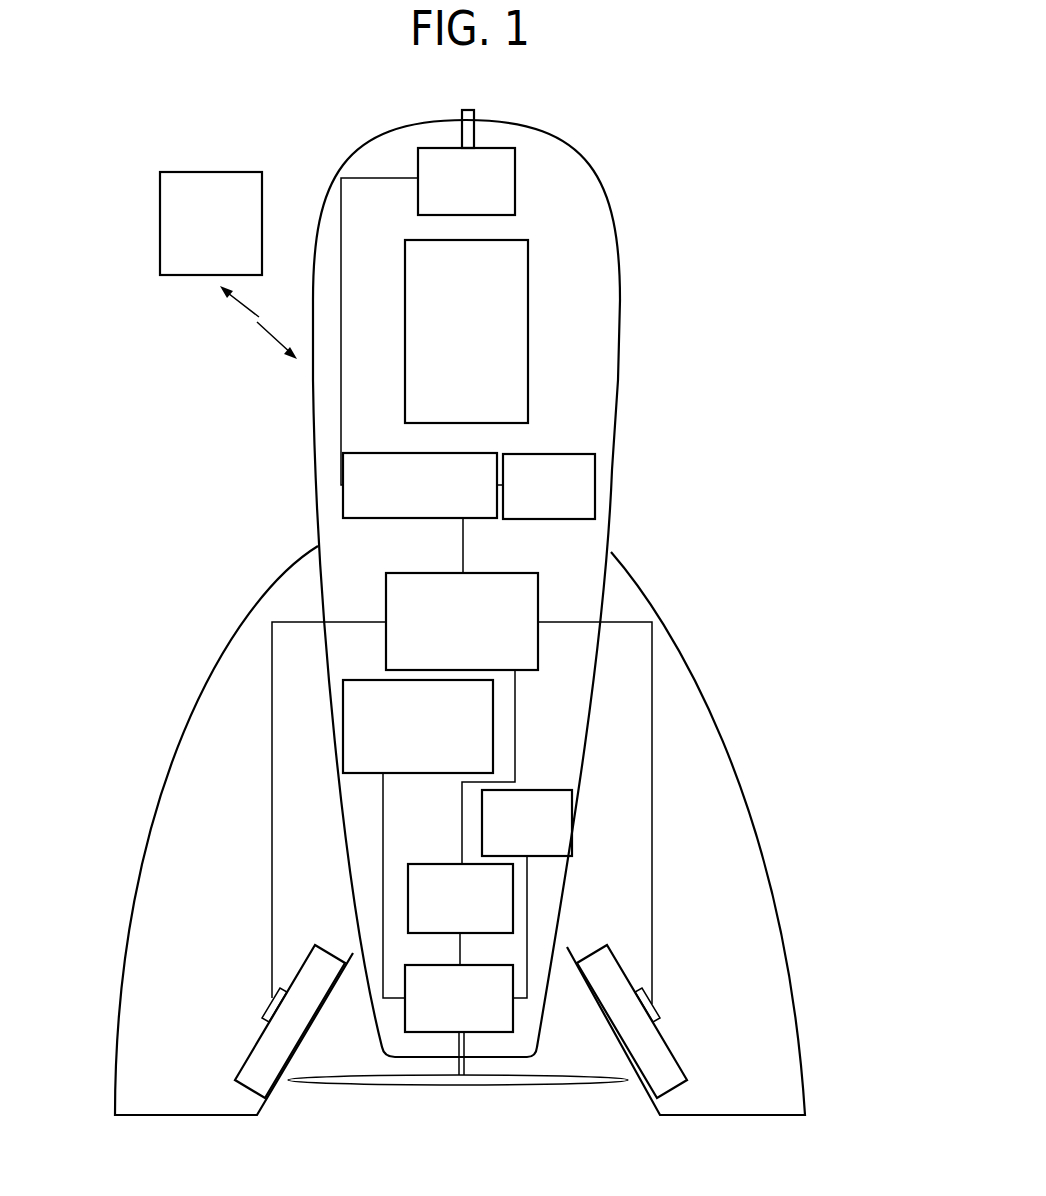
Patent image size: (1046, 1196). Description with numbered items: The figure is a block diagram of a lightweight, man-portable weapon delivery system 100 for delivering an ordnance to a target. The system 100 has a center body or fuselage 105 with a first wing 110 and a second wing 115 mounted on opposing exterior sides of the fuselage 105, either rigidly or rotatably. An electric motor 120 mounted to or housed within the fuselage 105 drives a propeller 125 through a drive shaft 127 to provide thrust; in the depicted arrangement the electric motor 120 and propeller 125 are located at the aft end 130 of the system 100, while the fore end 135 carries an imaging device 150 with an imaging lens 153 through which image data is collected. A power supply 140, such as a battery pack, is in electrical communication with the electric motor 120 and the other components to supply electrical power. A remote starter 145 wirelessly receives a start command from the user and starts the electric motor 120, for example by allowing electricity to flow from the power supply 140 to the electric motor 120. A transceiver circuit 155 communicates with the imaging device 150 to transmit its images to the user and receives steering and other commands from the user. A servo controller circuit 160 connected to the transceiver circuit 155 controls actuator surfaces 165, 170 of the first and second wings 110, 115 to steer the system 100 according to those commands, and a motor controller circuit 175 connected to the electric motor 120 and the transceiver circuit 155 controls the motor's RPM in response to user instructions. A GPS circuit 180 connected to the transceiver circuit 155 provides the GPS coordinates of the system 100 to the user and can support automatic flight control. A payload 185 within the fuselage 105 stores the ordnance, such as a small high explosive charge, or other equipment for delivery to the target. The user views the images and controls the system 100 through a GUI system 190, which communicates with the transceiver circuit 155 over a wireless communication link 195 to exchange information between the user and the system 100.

The weapon delivery system 100 is at (662, 268).
The fuselage 105 is at (620, 332).
The first wing 110 is at (262, 605).
The second wing 115 is at (700, 667).
The electric motor 120 is at (440, 965).
The propeller 125 is at (545, 1088).
The drive shaft 127 is at (465, 1065).
The aft end 130 is at (575, 1032).
The fore end 135 is at (613, 140).
The power supply 140 is at (543, 790).
The remote starter 145 is at (433, 864).
The imaging device 150 is at (515, 172).
The imaging lens 153 is at (470, 110).
The transceiver circuit 155 is at (382, 453).
The servo controller circuit 160 is at (530, 573).
The actuator surface of first wing 165 is at (332, 990).
The actuator surface of second wing 170 is at (578, 980).
The motor controller circuit 175 is at (360, 680).
The GPS circuit 180 is at (575, 453).
The payload 185 is at (531, 318).
The GUI system 190 is at (214, 172).
The wireless communication link 195 is at (257, 323).